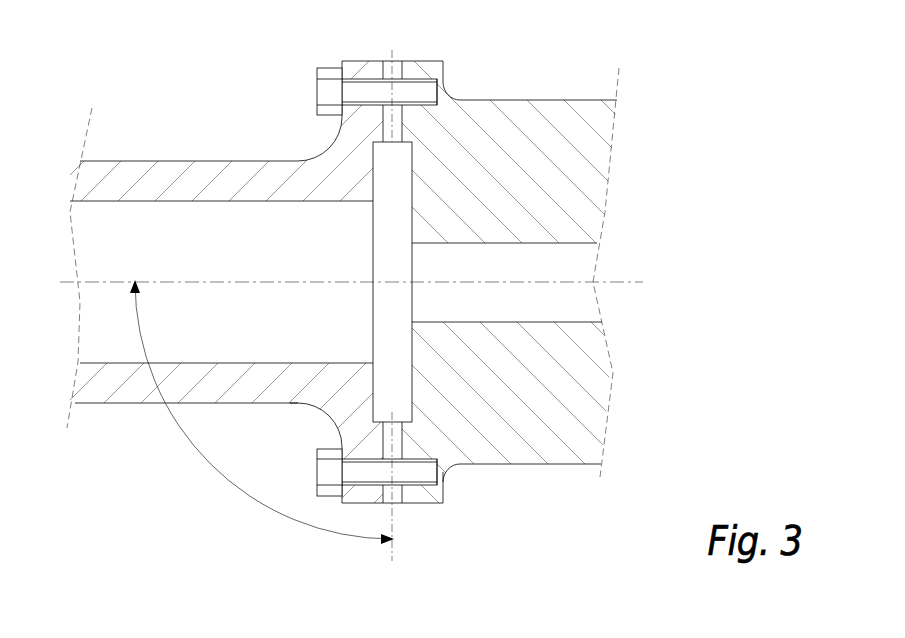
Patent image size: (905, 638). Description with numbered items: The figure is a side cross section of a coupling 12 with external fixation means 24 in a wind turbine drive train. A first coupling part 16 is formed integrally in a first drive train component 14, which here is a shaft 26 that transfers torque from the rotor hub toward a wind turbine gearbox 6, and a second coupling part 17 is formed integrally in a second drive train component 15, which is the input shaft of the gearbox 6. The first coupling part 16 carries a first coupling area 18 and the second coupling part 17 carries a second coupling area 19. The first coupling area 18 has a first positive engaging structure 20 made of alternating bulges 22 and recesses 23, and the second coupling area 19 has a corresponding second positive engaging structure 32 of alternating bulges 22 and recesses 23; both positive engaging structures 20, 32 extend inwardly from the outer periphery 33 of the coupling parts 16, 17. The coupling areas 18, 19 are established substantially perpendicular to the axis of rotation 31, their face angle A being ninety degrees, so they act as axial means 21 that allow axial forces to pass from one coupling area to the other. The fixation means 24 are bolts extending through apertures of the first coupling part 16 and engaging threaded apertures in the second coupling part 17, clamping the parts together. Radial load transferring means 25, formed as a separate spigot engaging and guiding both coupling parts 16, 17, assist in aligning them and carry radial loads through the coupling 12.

The wind turbine gearbox 6 is at (597, 457).
The coupling 12 is at (326, 47).
The first drive train component 14 is at (188, 178).
The second drive train component 15 is at (561, 122).
The first coupling part 16 is at (316, 395).
The second coupling part 17 is at (433, 423).
The first coupling area 18 is at (386, 497).
The second coupling area 19 is at (440, 462).
The first positive engaging structure 20 is at (398, 70).
The axial means 21 is at (388, 61).
The bulges 22 is at (393, 503).
The recesses 23 is at (399, 497).
The fixation means 24 is at (325, 92).
The radial load transferring means 25 is at (400, 163).
The shaft 26 is at (135, 390).
The axis of rotation 31 is at (645, 282).
The second positive engaging structure 32 is at (517, 637).
The outer periphery 33 is at (393, 72).
The face angle A is at (262, 412).